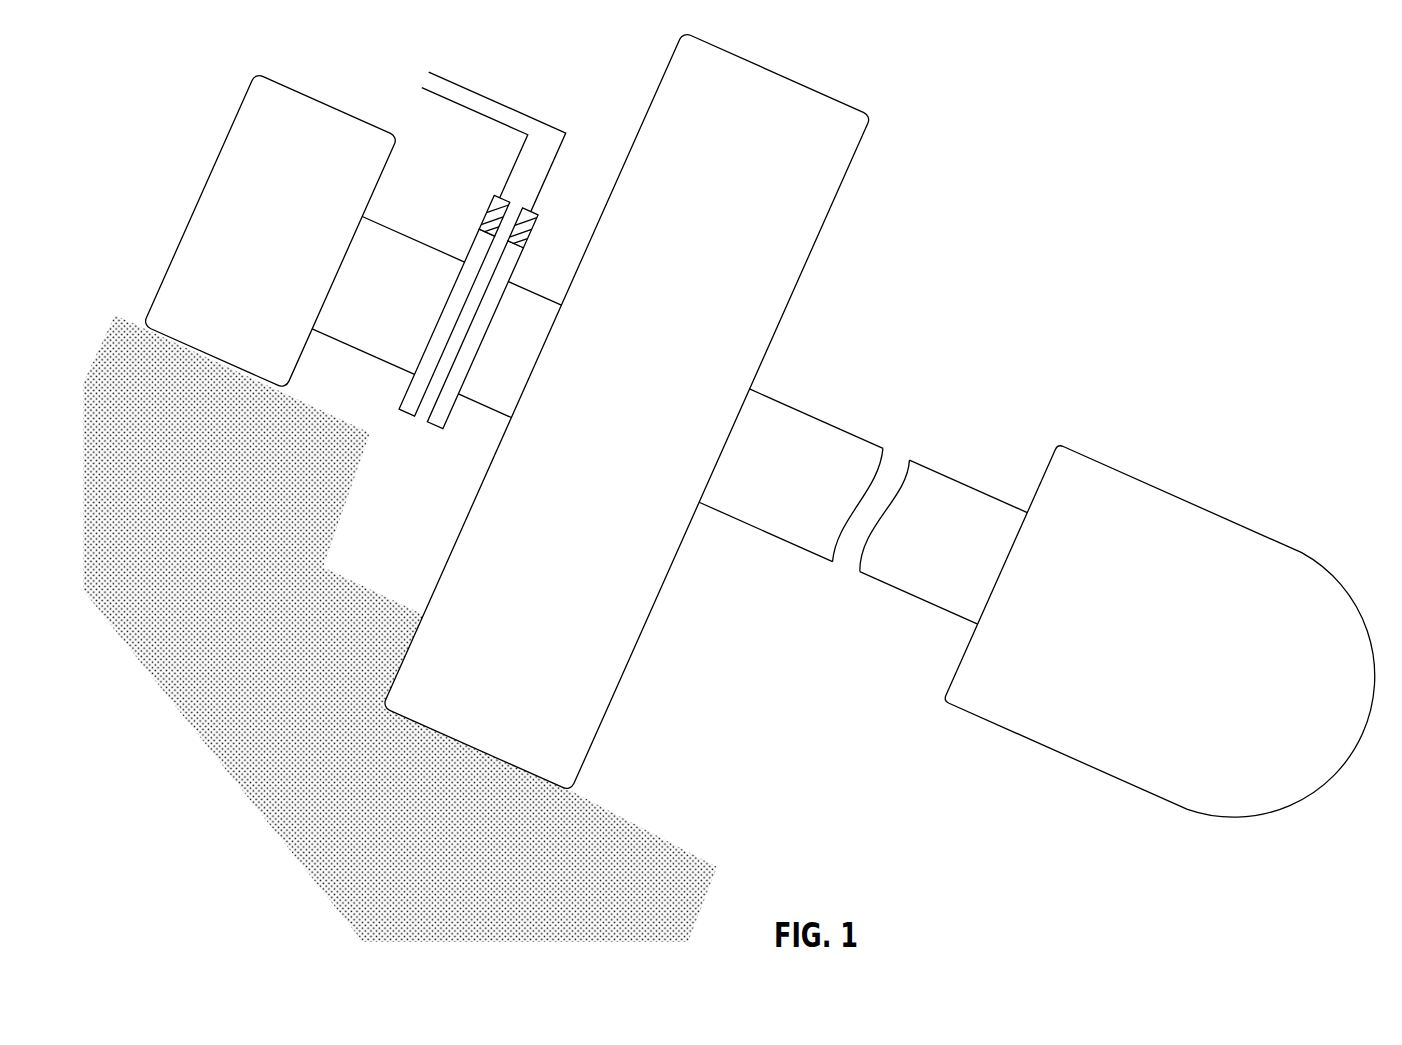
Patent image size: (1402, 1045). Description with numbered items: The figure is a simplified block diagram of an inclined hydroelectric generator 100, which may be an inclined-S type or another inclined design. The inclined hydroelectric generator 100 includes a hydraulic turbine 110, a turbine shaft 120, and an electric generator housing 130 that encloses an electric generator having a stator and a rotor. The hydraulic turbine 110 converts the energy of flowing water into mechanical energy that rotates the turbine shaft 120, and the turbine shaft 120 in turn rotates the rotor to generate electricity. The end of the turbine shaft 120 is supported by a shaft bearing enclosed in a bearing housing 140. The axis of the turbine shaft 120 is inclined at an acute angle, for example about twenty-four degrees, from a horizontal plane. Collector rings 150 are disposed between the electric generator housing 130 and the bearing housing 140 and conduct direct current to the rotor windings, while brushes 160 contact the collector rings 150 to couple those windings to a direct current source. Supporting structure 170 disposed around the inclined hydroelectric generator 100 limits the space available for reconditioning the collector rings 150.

The inclined hydroelectric generator 100 is at (1186, 168).
The hydraulic turbine 110 is at (1145, 656).
The turbine shaft 120 is at (779, 488).
The electric generator housing 130 is at (564, 544).
The bearing housing 140 is at (235, 278).
The collector rings 150 is at (399, 409).
The brushes 160 is at (521, 212).
The supporting structure 170 is at (213, 622).